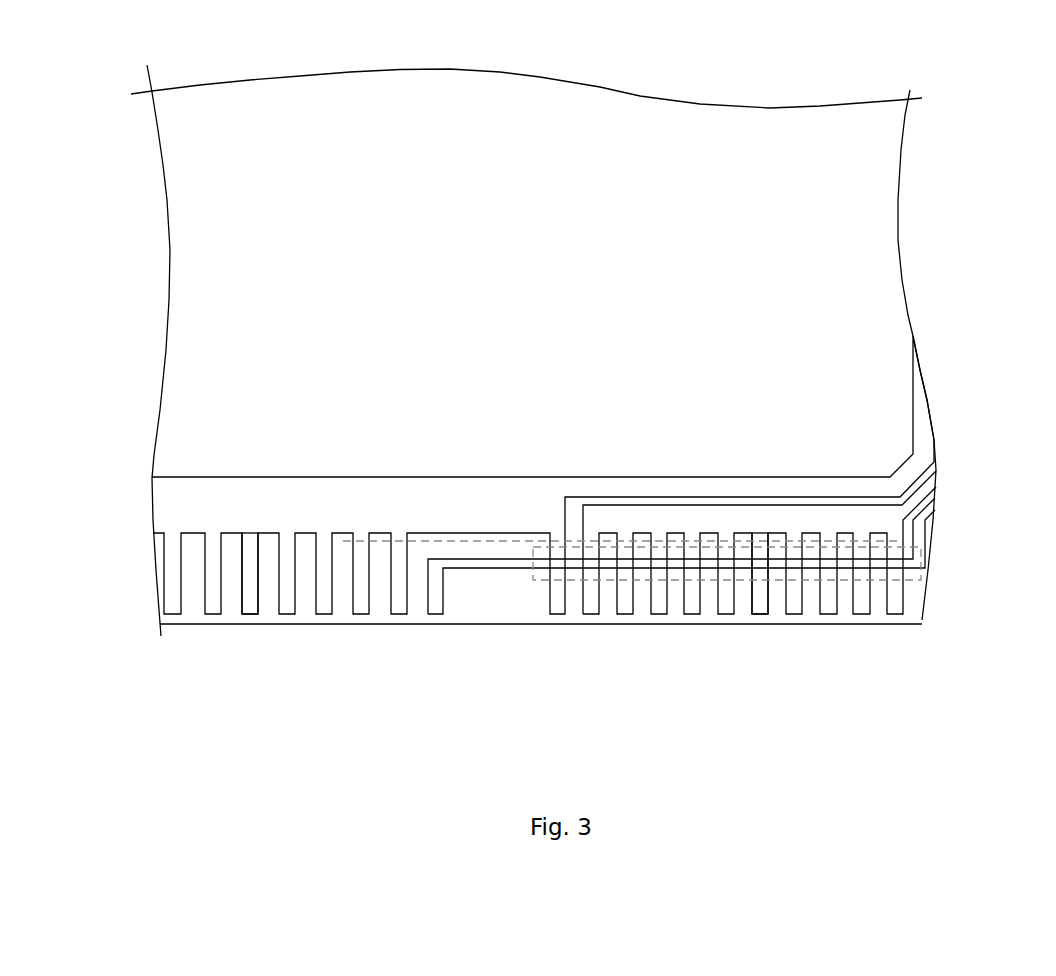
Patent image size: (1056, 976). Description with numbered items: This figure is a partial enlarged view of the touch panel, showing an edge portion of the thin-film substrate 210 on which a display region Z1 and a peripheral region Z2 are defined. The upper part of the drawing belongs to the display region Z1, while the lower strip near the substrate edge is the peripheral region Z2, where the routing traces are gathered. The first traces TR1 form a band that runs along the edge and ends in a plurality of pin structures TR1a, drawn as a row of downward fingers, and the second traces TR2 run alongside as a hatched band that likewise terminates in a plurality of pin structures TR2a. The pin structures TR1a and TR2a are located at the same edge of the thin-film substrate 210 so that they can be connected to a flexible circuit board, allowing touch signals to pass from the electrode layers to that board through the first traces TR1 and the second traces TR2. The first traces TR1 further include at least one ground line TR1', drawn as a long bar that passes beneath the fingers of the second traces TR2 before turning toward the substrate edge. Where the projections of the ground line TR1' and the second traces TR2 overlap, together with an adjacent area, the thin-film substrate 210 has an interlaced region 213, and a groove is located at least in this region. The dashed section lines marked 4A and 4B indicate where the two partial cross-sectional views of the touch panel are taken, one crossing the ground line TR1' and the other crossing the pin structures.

The display region Z1 is at (532, 98).
The peripheral region Z2 is at (183, 645).
The first traces TR1 is at (480, 475).
The pin structures TR1a is at (248, 608).
The ground line TR1' is at (671, 599).
The second traces TR2 is at (937, 478).
The pin structures TR2a is at (758, 608).
The interlaced region 213 is at (845, 585).
The thin-film substrate 210 is at (917, 613).
The line 4A- 4A is at (905, 537).
The line 4B- 4B is at (343, 547).